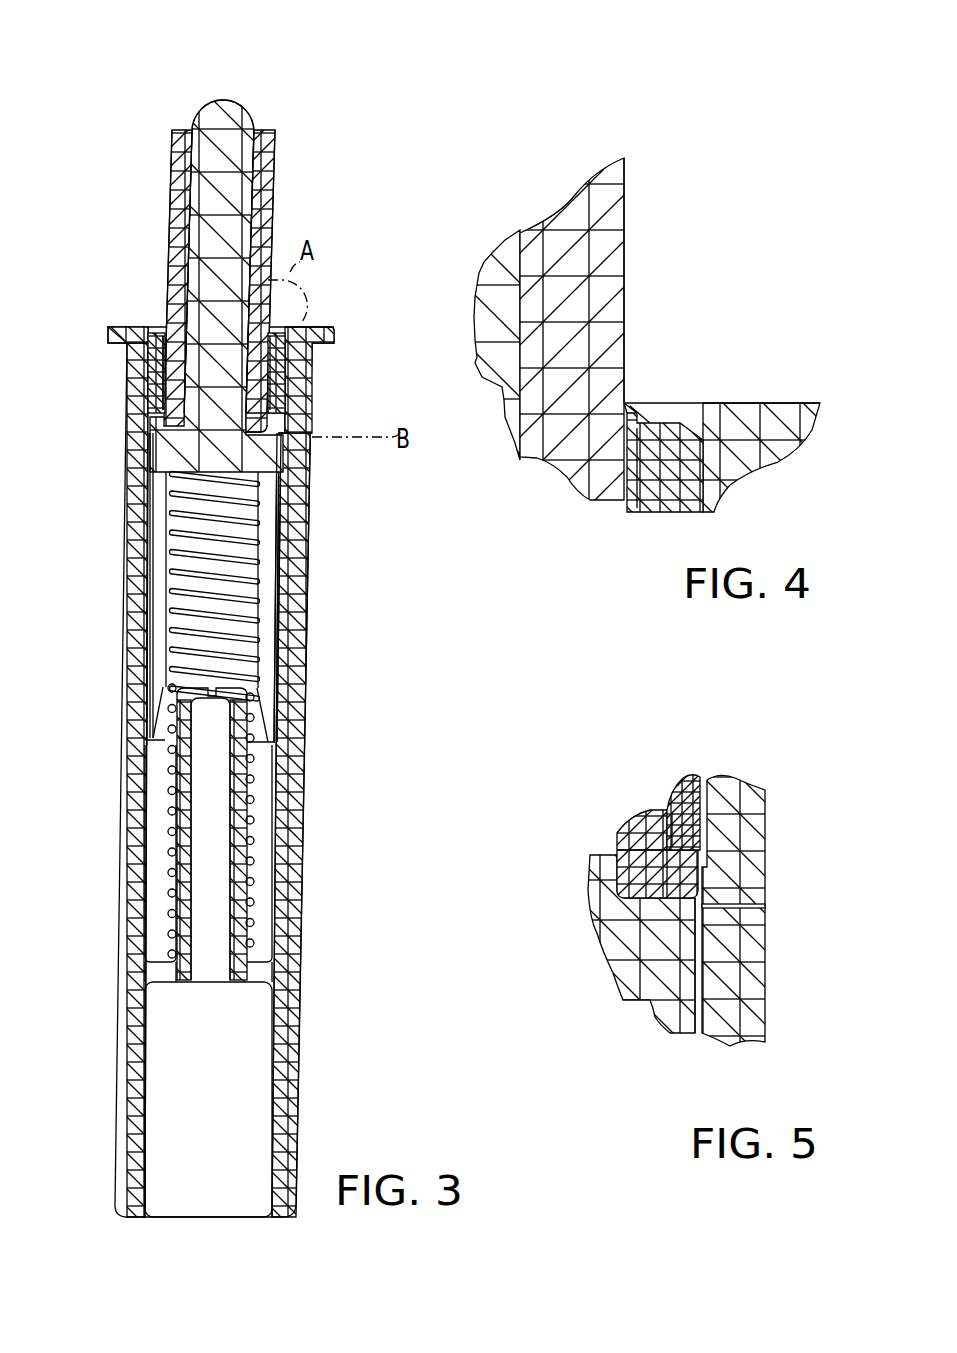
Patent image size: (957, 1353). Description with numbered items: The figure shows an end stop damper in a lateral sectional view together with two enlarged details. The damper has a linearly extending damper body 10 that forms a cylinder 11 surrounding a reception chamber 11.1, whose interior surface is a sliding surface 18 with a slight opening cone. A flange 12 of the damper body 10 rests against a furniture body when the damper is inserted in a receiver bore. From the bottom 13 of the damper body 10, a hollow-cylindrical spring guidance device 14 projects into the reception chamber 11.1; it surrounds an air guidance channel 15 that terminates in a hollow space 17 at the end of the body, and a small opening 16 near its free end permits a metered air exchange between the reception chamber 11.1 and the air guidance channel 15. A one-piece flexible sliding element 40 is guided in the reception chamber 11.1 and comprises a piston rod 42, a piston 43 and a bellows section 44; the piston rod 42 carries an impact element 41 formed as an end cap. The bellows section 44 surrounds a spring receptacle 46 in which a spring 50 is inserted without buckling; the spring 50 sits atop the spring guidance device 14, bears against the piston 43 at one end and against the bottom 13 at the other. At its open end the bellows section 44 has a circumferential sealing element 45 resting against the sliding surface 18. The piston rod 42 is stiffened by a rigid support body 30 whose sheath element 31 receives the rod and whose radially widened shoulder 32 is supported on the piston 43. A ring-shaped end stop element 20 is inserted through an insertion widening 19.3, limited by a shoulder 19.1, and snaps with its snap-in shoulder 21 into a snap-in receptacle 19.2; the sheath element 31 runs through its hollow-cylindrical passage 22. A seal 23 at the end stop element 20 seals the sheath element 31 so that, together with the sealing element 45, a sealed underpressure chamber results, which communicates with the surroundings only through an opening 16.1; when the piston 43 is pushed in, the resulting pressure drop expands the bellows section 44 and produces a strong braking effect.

In FIG. 3, the damper body 10 is at (325, 633).
In FIG. 3, the cylinder 11 is at (300, 800).
In FIG. 5, the cylinder 11 is at (722, 1008).
In FIG. 3, the reception chamber 11.1 is at (165, 830).
In FIG. 3, the flange 12 is at (312, 328).
In FIG. 4, the flange 12 is at (778, 418).
In FIG. 3, the bottom 13 is at (260, 970).
In FIG. 3, the spring guidance device 14 is at (237, 900).
In FIG. 3, the air guidance channel 15 is at (212, 862).
In FIG. 3, the opening 16 is at (243, 687).
In FIG. 3, the opening 16.1 is at (283, 490).
In FIG. 5, the opening 16.1 is at (725, 905).
In FIG. 3, the hollow space 17 is at (262, 1095).
In FIG. 3, the sliding surface 18 is at (272, 905).
In FIG. 3, the shoulder 19.1 is at (283, 395).
In FIG. 3, the snap-in receptacle 19.2 is at (288, 370).
In FIG. 3, the insertion widening 19.3 is at (298, 322).
In FIG. 4, the insertion widening 19.3 is at (737, 420).
In FIG. 3, the end stop element 20 is at (148, 323).
In FIG. 4, the end stop element 20 is at (667, 483).
In FIG. 5, the end stop element 20 is at (683, 790).
In FIG. 3, the snap-in shoulder 21 is at (150, 372).
In FIG. 3, the passage 22 is at (156, 330).
In FIG. 4, the passage 22 is at (640, 448).
In FIG. 4, the seal 23 is at (628, 402).
In FIG. 3, the support body 30 is at (286, 178).
In FIG. 4, the support body 30 is at (640, 210).
In FIG. 3, the sheath element 31 is at (268, 222).
In FIG. 4, the sheath element 31 is at (562, 225).
In FIG. 5, the sheath element 31 is at (633, 832).
In FIG. 3, the shoulder 32 is at (290, 432).
In FIG. 5, the shoulder 32 is at (667, 880).
In FIG. 3, the sliding element 40 is at (250, 97).
In FIG. 4, the sliding element 40 is at (495, 270).
In FIG. 5, the sliding element 40 is at (585, 900).
In FIG. 3, the impact element 41 is at (212, 105).
In FIG. 3, the piston rod 42 is at (198, 183).
In FIG. 3, the piston 43 is at (152, 456).
In FIG. 5, the piston 43 is at (632, 950).
In FIG. 3, the bellows section 44 is at (162, 580).
In FIG. 3, the sealing element 45 is at (148, 740).
In FIG. 3, the spring receptacle 46 is at (172, 500).
In FIG. 3, the spring 50 is at (255, 538).